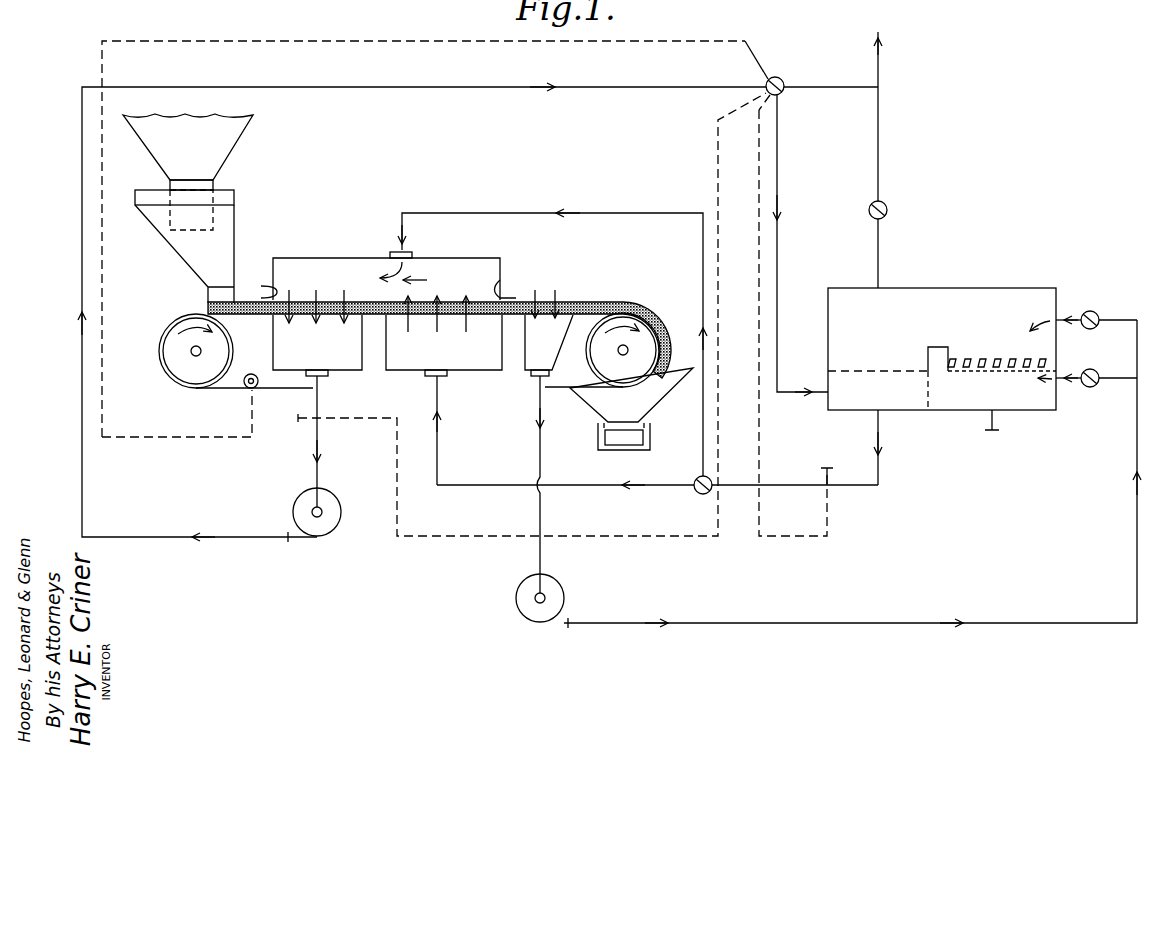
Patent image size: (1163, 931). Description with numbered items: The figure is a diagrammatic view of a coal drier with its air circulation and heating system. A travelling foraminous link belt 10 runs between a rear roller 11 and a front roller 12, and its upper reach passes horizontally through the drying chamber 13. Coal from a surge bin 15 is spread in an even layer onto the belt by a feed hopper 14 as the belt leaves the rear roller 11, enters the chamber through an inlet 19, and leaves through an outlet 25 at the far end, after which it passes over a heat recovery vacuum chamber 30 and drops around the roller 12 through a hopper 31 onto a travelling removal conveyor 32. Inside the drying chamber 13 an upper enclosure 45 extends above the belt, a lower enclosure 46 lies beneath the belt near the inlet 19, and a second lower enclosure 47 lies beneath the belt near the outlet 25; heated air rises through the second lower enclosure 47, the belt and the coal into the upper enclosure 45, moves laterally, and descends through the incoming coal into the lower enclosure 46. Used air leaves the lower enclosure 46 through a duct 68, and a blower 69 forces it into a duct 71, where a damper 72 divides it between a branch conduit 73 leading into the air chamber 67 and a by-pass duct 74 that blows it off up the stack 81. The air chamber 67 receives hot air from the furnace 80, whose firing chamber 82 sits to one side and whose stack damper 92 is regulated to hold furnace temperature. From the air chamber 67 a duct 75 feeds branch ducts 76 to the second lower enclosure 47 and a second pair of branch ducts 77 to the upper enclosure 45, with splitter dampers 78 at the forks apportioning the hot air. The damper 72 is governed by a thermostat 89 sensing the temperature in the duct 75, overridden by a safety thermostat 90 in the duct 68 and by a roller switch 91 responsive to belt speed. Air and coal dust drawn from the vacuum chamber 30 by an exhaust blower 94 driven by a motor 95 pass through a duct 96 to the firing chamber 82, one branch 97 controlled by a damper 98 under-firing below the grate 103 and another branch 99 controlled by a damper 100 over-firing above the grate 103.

The travelling foraminous link belt 10 is at (225, 386).
The rear roller 11 is at (173, 351).
The roller 12 is at (610, 368).
The drying chamber 13 is at (306, 257).
The feed hopper 14 is at (234, 230).
The surge bin 15 is at (232, 145).
The inlet 19 is at (276, 289).
The outlet 25 is at (505, 299).
The heat recovery vacuum chamber 30 is at (527, 362).
The hopper 31 is at (642, 402).
The travelling removal conveyor 32 is at (617, 433).
The upper enclosure 45 is at (340, 268).
The lower enclosure 46 is at (345, 360).
The second lower enclosure 47 is at (412, 360).
The air chamber 67 is at (918, 398).
The duct 68 is at (320, 438).
The blower 69 is at (333, 512).
The duct 71 is at (625, 85).
The damper 72 is at (779, 76).
The branch conduit 73 is at (780, 258).
The by-pass duct 74 is at (828, 88).
The duct 75 is at (848, 488).
The branch ducts 76 is at (590, 487).
The second pair of branch ducts 77 is at (631, 213).
The splitter dampers 78 is at (712, 478).
The furnace 80 is at (944, 288).
The stack 81 is at (882, 74).
The firing chamber 82 is at (1002, 343).
The thermostat 89 is at (822, 475).
The thermostat 90 is at (298, 421).
The roller switch 91 is at (249, 389).
The stack damper 92 is at (889, 210).
The exhaust blower 94 is at (530, 612).
The motor 95 is at (540, 441).
The duct 96 is at (850, 485).
The branch 97 is at (1088, 387).
The damper 98 is at (1096, 370).
The branch 99 is at (1059, 318).
The damper 100 is at (1098, 313).
The grate 103 is at (963, 363).